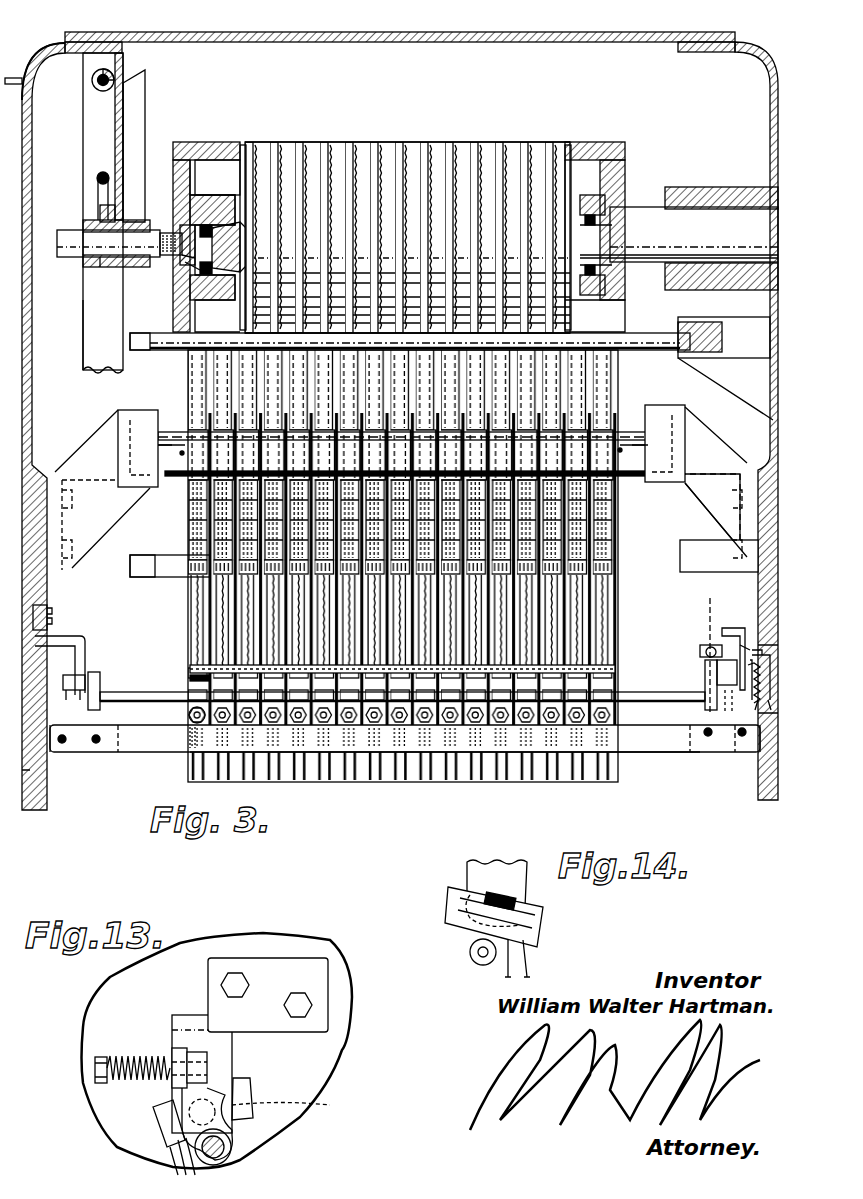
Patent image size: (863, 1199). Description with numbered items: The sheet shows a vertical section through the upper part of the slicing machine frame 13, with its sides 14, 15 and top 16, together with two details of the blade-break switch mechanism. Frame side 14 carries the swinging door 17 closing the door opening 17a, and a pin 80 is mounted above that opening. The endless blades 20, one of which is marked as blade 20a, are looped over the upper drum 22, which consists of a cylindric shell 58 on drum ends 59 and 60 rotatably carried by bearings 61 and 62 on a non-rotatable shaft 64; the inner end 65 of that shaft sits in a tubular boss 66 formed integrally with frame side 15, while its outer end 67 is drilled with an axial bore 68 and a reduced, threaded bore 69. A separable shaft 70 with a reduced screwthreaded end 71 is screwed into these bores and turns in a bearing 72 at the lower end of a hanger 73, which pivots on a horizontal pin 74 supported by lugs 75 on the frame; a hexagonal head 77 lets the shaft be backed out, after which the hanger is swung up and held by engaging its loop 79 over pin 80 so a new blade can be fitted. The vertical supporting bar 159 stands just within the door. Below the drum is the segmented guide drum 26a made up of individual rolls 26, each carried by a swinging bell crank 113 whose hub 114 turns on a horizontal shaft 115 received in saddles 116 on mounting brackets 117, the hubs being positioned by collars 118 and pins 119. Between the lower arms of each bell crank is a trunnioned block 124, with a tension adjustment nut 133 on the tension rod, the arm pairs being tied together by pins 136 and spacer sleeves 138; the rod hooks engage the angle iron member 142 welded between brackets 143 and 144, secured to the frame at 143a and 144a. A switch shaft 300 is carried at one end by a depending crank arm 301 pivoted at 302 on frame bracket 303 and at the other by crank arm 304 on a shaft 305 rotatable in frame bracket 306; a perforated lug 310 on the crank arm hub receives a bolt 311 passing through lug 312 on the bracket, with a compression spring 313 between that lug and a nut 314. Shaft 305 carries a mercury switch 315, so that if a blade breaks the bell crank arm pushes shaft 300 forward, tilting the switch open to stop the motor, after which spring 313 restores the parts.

In FIG. 3, the frame 13 is at (708, 598).
In FIG. 3, the frame side 14 is at (30, 772).
In FIG. 3, the frame side 15 is at (775, 430).
In FIG. 3, the top 16 is at (418, 32).
In FIG. 3, the swinging door 17 is at (30, 283).
In FIG. 3, the door opening 17a is at (30, 108).
In FIG. 3, the endless blades 20 is at (572, 150).
In FIG. 3, the type wheel disc 20a is at (450, 150).
In FIG. 3, the upper band blade supporting drum 22 is at (598, 134).
In FIG. 3, the individual drums or rolls 26 is at (580, 395).
In FIG. 3, the segmented blade deflecting guide drum 26a is at (616, 358).
In FIG. 3, the cylindric shell 58 is at (215, 142).
In FIG. 3, the drum end 59 is at (178, 145).
In FIG. 3, the drum end 60 is at (615, 168).
In FIG. 3, the bearing 61 is at (233, 195).
In FIG. 3, the bearing 62 is at (625, 188).
In FIG. 3, the non-rotatable shaft 64 is at (262, 138).
In FIG. 3, the inner end of shaft 65 is at (688, 222).
In FIG. 3, the tubular boss 66 is at (725, 198).
In FIG. 3, the outer end of shaft 67 is at (178, 232).
In FIG. 3, the axial bore 68 is at (162, 265).
In FIG. 3, the reduced axial bore 69 is at (170, 268).
In FIG. 3, the shaft 70 is at (115, 280).
In FIG. 3, the reduced screwthreaded end 71 is at (178, 272).
In FIG. 3, the bearing 72 is at (110, 293).
In FIG. 3, the hanger 73 is at (112, 128).
In FIG. 3, the horizontal pin 74 is at (112, 80).
In FIG. 3, the lugs 75 is at (115, 60).
In FIG. 3, the hexagonal head 77 is at (68, 232).
In FIG. 3, the loop 79 is at (100, 215).
In FIG. 3, the pin 80 is at (13, 78).
In FIG. 3, the swinging bell cranks 113 is at (290, 608).
In FIG. 3, the bell crank hub 114 is at (262, 445).
In FIG. 3, the horizontal shaft 115 is at (632, 435).
In FIG. 3, the saddles 116 is at (140, 425).
In FIG. 3, the mounting brackets 117 is at (100, 520).
In FIG. 3, the collars 118 is at (182, 432).
In FIG. 3, the pins 119 is at (182, 451).
In FIG. 3, the block 124 is at (195, 727).
In FIG. 3, the tension adjustment nut 133 is at (190, 715).
In FIG. 3, the pins 136 is at (192, 676).
In FIG. 3, the spacer sleeves 138 is at (195, 668).
In FIG. 3, the angle iron member 142 is at (165, 752).
In FIG. 3, the bracket 143 is at (688, 752).
In FIG. 3, the bracket securing point 143a is at (725, 752).
In FIG. 3, the bracket 144 is at (120, 752).
In FIG. 3, the bracket securing point 144a is at (85, 752).
In FIG. 3, the vertical supporting bar 159 is at (90, 358).
In FIG. 3, the shaft 300 is at (135, 702).
In FIG. 13, the shaft 300 is at (226, 1152).
In FIG. 14, the shaft 300 is at (480, 965).
In FIG. 3, the depending crank arm 301 is at (100, 692).
In FIG. 3, the pivot 302 is at (80, 678).
In FIG. 3, the frame bracket 303 is at (80, 652).
In FIG. 3, the depending crank arm 304 is at (706, 678).
In FIG. 13, the depending crank arm 304 is at (230, 1135).
In FIG. 3, the shaft 305 is at (726, 730).
In FIG. 13, the shaft 305 is at (255, 1112).
In FIG. 14, the shaft 305 is at (462, 900).
In FIG. 3, the frame bracket 306 is at (745, 640).
In FIG. 13, the frame bracket 306 is at (191, 1010).
In FIG. 14, the frame bracket 306 is at (461, 873).
In FIG. 13, the perforated lug 310 is at (195, 1085).
In FIG. 13, the bolt 311 is at (172, 1060).
In FIG. 13, the perforated lug 312 is at (172, 1045).
In FIG. 13, the compression spring 313 is at (122, 1060).
In FIG. 13, the nut 314 is at (95, 1070).
In FIG. 3, the mercury switch 315 is at (755, 640).
In FIG. 14, the mercury switch 315 is at (452, 912).